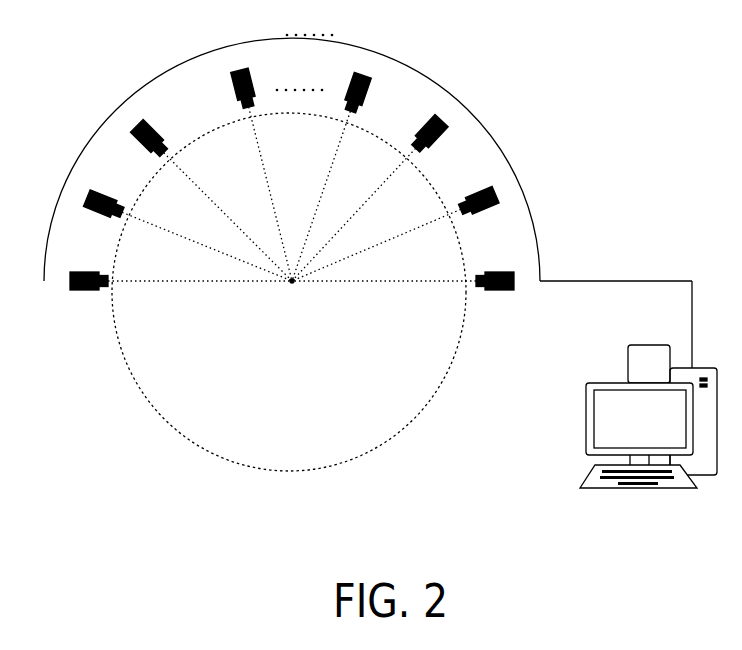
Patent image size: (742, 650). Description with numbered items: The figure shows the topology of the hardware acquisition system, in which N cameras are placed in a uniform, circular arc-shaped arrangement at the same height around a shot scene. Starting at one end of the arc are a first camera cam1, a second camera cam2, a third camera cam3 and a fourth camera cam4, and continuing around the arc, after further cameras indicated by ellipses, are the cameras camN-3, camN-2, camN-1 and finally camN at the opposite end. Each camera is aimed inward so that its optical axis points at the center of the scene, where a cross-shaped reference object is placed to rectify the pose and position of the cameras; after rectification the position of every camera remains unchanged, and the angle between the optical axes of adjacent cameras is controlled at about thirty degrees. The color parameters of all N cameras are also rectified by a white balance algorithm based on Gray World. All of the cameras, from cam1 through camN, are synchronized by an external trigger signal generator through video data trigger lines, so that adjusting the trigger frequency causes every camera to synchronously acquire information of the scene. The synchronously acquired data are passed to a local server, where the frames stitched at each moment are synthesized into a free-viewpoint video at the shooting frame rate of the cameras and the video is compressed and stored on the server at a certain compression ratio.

The camera cam1 is at (70, 281).
The camera cam2 is at (87, 198).
The camera cam3 is at (137, 126).
The camera cam4 is at (239, 70).
The camera camN-3 is at (363, 75).
The camera camN-2 is at (442, 121).
The camera camN-1 is at (496, 195).
The camera camN is at (514, 281).
The shot scene is at (289, 292).
The local server is at (628, 372).